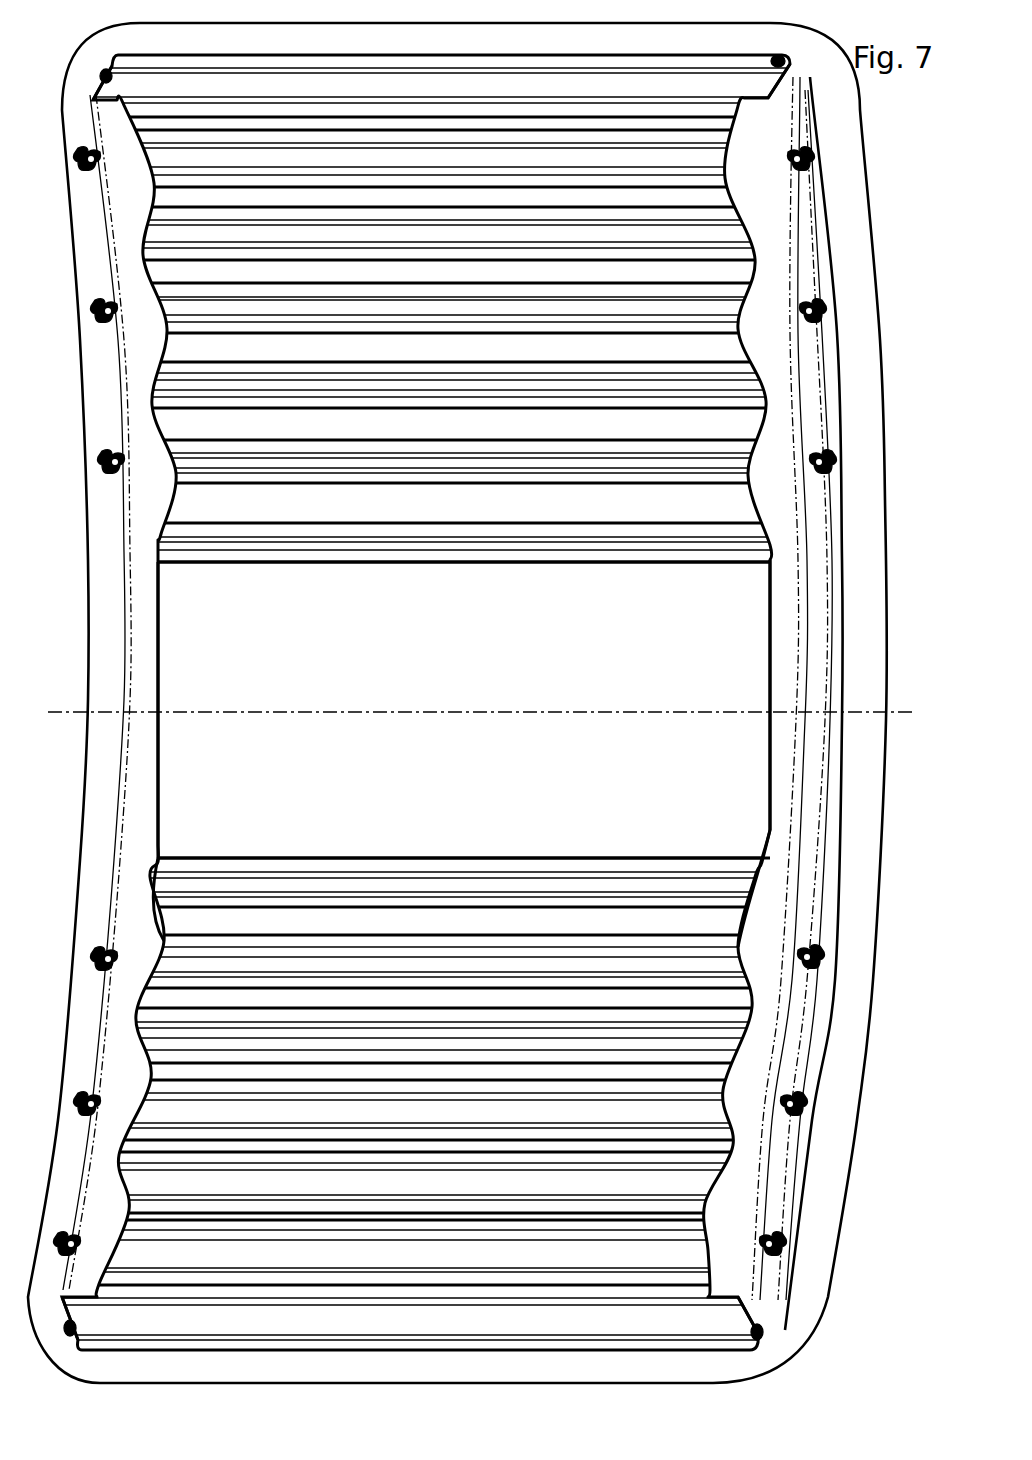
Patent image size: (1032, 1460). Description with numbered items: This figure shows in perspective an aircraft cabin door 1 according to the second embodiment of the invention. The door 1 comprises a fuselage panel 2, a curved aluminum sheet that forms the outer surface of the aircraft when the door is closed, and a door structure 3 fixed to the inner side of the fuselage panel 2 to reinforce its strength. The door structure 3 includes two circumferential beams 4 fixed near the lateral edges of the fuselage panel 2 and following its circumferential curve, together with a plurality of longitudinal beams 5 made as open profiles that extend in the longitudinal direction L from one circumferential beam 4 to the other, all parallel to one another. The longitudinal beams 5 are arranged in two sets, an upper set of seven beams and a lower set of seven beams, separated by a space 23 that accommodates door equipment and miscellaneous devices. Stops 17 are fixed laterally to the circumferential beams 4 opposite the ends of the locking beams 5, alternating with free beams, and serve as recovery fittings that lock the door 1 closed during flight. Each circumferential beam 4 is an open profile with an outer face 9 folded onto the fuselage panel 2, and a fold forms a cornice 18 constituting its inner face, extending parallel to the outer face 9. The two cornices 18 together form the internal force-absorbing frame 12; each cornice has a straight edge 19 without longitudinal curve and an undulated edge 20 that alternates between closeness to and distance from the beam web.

The cabin door 1 is at (872, 165).
The fuselage panel 2 is at (877, 370).
The door structure 3 is at (760, 98).
The circumferential beams 4 is at (802, 234).
The longitudinal beams 5 is at (345, 1320).
The outer face 9 is at (832, 690).
The internal force-absorbing frame 12 is at (798, 602).
The stops 17 is at (82, 1108).
The cornice 18 is at (140, 758).
The straight edge 19 is at (124, 262).
The undulated edge 20 is at (165, 922).
The space 23 is at (460, 752).
The longitudinal direction L is at (368, 712).